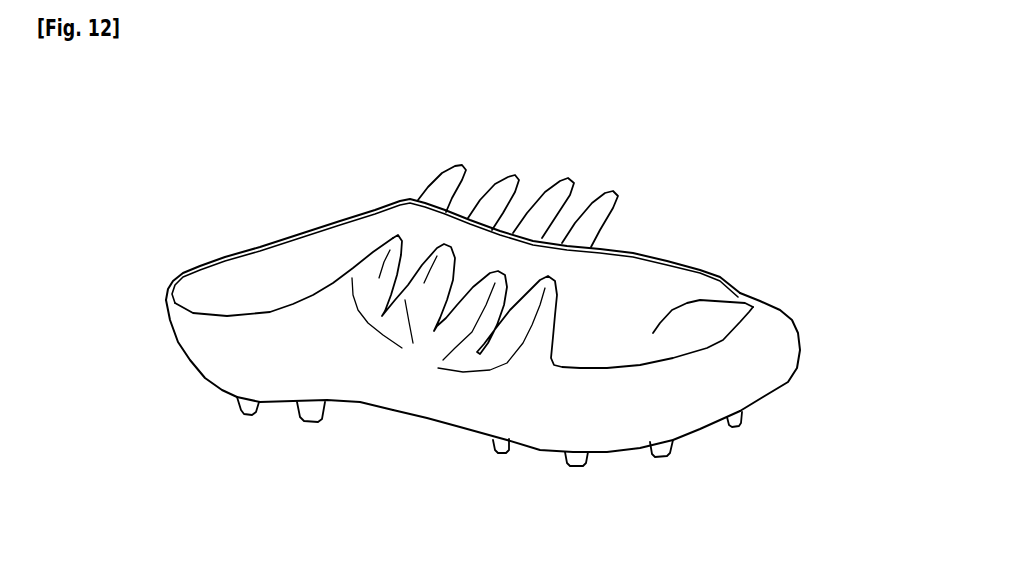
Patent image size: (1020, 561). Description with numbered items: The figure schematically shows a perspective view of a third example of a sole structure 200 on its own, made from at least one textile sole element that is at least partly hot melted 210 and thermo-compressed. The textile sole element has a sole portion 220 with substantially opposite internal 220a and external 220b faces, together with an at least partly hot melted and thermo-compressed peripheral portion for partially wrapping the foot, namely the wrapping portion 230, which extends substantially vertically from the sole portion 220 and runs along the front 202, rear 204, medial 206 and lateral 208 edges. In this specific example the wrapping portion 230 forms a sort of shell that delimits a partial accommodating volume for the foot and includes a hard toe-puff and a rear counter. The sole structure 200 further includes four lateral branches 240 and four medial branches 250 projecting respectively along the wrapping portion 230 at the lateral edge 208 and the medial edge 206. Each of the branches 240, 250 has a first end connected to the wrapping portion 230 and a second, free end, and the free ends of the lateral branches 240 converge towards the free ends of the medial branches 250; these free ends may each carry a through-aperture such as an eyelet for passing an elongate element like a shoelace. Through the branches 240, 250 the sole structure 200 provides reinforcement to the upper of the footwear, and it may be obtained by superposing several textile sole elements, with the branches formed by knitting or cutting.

The sole structure 200 is at (399, 301).
The front edge 202 is at (811, 352).
The rear edge 204 is at (182, 379).
The medial edge 206 is at (566, 471).
The lateral edge 208 is at (471, 241).
The hot melted portion 210 is at (489, 455).
The sole portion 220 is at (441, 241).
The internal face 220a is at (733, 290).
The external face 220b is at (315, 453).
The peripheral wrapping portion 230 is at (543, 484).
The lateral branches 240 is at (518, 146).
The medial branches 250 is at (448, 311).